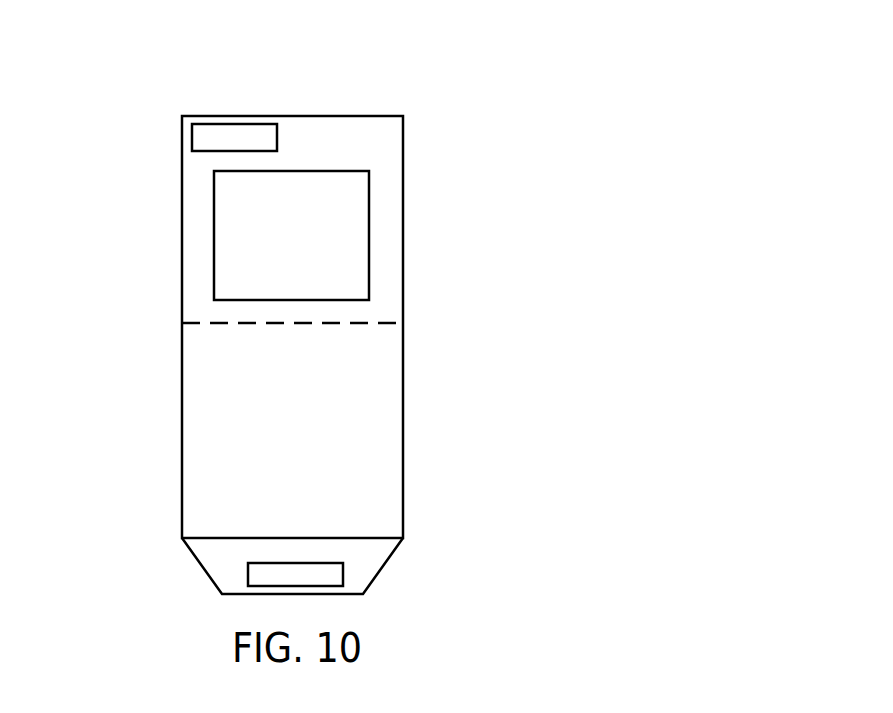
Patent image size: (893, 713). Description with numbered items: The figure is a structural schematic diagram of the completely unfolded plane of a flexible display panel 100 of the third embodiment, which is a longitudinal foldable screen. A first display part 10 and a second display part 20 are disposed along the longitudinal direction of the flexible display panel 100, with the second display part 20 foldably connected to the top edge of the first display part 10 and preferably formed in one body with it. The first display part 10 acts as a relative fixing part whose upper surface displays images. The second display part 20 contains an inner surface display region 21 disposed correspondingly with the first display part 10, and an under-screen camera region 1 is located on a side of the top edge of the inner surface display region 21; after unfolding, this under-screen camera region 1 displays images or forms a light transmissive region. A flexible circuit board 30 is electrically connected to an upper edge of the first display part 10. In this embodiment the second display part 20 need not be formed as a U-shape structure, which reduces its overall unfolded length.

The flexible display panel 100 is at (125, 60).
The under-screen camera region 1 is at (235, 137).
The second display part 20 is at (347, 138).
The inner surface display region 21 is at (327, 243).
The first display part 10 is at (370, 418).
The flexible circuit board 30 is at (370, 558).